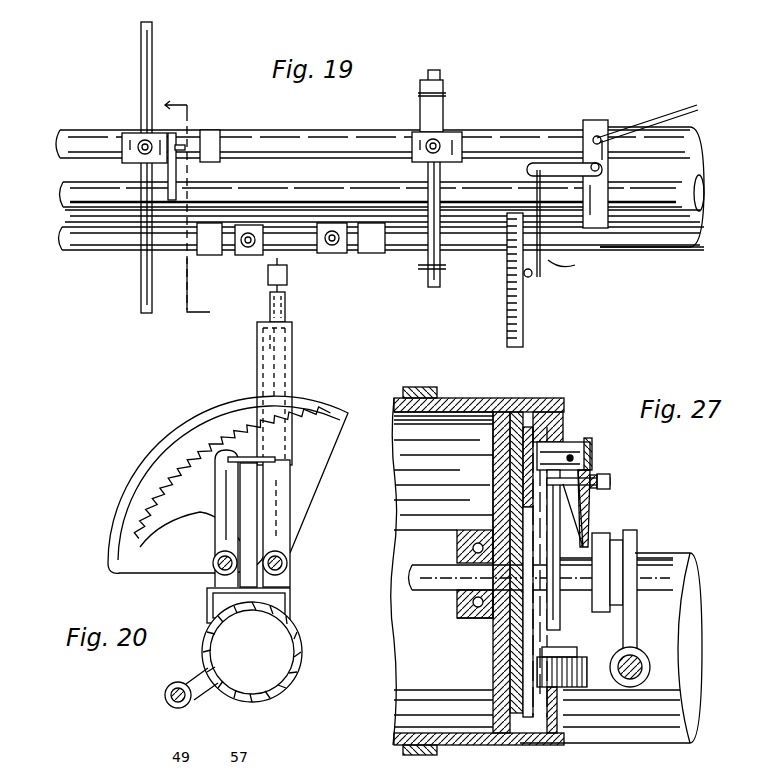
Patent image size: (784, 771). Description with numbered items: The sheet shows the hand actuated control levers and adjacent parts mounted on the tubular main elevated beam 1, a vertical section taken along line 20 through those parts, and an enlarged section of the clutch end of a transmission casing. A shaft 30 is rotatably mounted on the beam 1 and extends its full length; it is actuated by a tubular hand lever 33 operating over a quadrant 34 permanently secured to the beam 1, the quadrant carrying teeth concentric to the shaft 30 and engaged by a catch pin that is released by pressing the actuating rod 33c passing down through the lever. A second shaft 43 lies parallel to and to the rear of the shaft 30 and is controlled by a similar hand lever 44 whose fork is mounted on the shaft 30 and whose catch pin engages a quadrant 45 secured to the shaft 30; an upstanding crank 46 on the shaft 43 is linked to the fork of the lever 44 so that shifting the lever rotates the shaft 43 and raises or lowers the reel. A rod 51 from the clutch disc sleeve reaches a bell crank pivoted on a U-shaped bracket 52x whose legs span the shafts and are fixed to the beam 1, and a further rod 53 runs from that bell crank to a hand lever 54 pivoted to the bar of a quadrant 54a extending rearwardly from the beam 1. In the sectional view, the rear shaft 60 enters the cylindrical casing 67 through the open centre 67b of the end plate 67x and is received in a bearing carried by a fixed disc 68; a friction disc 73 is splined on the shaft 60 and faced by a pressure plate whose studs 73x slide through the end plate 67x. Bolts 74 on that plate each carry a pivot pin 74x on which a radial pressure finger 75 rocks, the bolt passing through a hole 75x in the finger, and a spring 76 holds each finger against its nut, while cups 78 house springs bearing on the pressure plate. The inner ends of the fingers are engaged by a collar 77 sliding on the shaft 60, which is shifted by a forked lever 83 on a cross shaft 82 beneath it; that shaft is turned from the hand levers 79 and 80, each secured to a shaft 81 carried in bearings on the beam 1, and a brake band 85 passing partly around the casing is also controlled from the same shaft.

In FIG. 19, the main elevated beam 1 is at (522, 126).
In FIG. 20, the main elevated beam 1 is at (302, 648).
In FIG. 27, the main elevated beam 1 is at (668, 742).
In FIG. 19, the section line 20— 20 is at (197, 203).
In FIG. 19, the shaft 30 is at (58, 142).
In FIG. 20, the shaft 30 is at (288, 564).
In FIG. 19, the hand lever 33 is at (446, 158).
In FIG. 19, the actuating rod 33c is at (442, 138).
In FIG. 19, the quadrant 34 is at (428, 190).
In FIG. 19, the shaft 43 is at (60, 196).
In FIG. 20, the shaft 43 is at (212, 572).
In FIG. 19, the hand lever 44 is at (130, 136).
In FIG. 20, the hand lever 44 is at (292, 312).
In FIG. 19, the quadrant 45 is at (141, 280).
In FIG. 20, the quadrant 45 is at (340, 412).
In FIG. 19, the upstanding crank 46 is at (184, 190).
In FIG. 20, the upstanding crank 46 is at (215, 481).
In FIG. 19, the rod 51 is at (660, 114).
In FIG. 19, the U-shaped bracket 52x is at (598, 225).
In FIG. 19, the second rod 53 is at (565, 270).
In FIG. 19, the hand lever 54 is at (534, 276).
In FIG. 19, the quadrant 54a is at (507, 330).
In FIG. 27, the rear shaft 60 is at (438, 587).
In FIG. 27, the casing 67 is at (478, 404).
In FIG. 27, the open centre 67b is at (500, 612).
In FIG. 27, the end plate 67x is at (560, 412).
In FIG. 27, the fixed disc 68 is at (494, 440).
In FIG. 27, the friction disc 73 is at (512, 650).
In FIG. 27, the studs 73x is at (566, 452).
In FIG. 27, the bolts 74 is at (612, 481).
In FIG. 27, the pivot pin 74x is at (590, 500).
In FIG. 27, the pressure fingers 75 is at (592, 516).
In FIG. 27, the hole 75x is at (590, 490).
In FIG. 27, the spring 76 is at (546, 490).
In FIG. 27, the collar 77 is at (600, 590).
In FIG. 27, the thimbles or cups 78 is at (588, 684).
In FIG. 19, the hand actuated lever 79 is at (245, 257).
In FIG. 19, the hand actuated lever 80 is at (338, 256).
In FIG. 19, the shaft 81 is at (108, 244).
In FIG. 20, the shaft 81 is at (165, 695).
In FIG. 27, the cross shaft 82 is at (642, 660).
In FIG. 27, the forked lever 83 is at (640, 608).
In FIG. 27, the brake band 85 is at (440, 382).